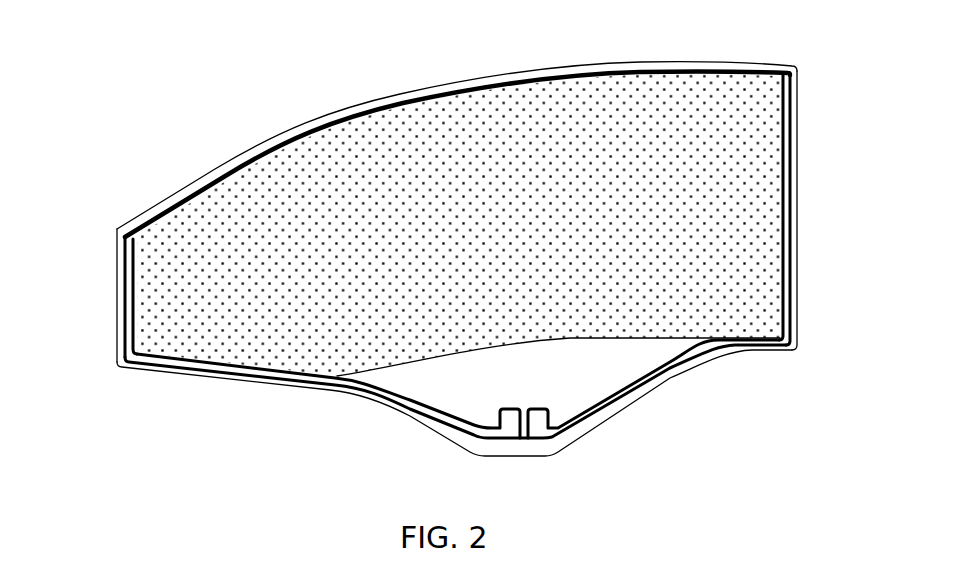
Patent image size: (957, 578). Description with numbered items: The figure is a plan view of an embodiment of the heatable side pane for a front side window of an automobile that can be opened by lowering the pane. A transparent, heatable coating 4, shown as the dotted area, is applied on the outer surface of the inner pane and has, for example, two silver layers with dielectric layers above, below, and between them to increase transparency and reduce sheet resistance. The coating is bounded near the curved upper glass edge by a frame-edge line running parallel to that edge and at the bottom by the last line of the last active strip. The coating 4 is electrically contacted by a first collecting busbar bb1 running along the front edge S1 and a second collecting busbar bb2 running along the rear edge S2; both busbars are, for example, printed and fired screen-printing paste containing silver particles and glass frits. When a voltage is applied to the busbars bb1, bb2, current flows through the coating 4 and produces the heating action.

The heatable coating 4 is at (464, 200).
The front edge S1 is at (85, 275).
The rear edge S2 is at (826, 210).
The first collecting busbar bb1 is at (97, 302).
The second collecting busbar bb2 is at (827, 209).